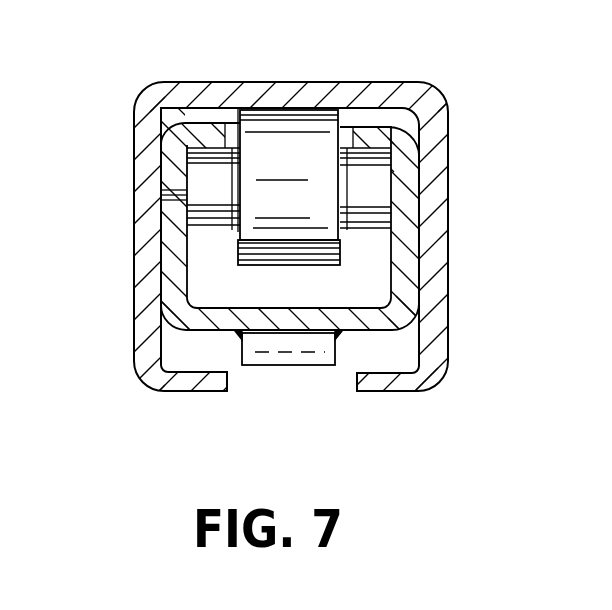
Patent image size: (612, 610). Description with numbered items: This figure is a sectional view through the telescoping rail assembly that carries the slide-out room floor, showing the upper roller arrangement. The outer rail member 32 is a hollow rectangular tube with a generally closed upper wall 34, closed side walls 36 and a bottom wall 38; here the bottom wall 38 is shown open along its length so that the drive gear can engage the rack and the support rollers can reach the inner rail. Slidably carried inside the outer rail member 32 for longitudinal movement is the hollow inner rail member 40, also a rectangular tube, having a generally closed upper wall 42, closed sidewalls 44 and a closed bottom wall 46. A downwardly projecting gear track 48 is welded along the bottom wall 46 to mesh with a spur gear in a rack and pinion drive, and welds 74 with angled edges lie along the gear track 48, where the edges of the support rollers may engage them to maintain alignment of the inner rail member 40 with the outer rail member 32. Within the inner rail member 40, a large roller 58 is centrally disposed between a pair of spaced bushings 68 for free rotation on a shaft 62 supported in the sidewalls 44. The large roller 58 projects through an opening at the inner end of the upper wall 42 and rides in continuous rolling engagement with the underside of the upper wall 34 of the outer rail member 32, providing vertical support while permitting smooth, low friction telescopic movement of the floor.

The outer rail member 32 is at (443, 92).
The upper wall 34 is at (317, 97).
The side walls 36 is at (143, 220).
The bottom wall 38 is at (313, 383).
The inner rail member 40 is at (400, 300).
The upper wall 42 is at (198, 133).
The sidewalls 44 is at (178, 286).
The bottom wall 46 is at (277, 320).
The gear track 48 is at (253, 365).
The large roller 58 is at (289, 187).
The shaft 62 is at (405, 188).
The bushings 68 is at (205, 180).
The welds 74 is at (230, 342).